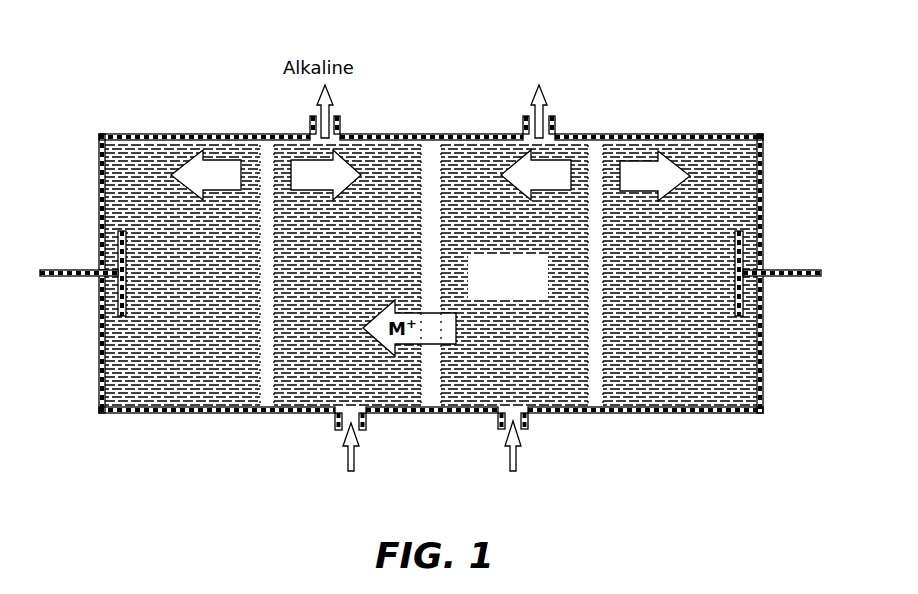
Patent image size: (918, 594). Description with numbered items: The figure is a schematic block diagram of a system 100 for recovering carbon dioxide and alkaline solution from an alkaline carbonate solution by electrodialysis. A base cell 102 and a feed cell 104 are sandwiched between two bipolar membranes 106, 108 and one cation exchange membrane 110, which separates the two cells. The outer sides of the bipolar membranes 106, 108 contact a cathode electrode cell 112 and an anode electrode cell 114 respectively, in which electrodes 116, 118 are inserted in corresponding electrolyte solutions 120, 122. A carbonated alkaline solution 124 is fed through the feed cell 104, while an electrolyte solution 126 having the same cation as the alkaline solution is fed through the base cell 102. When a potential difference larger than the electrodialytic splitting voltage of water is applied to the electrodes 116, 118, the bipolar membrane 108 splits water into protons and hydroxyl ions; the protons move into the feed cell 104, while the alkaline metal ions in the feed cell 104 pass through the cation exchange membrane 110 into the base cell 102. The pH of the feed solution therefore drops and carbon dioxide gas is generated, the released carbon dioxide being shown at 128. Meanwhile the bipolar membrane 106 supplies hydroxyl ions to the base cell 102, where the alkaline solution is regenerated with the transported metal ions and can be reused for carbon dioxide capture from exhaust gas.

The system 100 is at (155, 40).
The base cell 102 is at (359, 381).
The feed cell 104 is at (519, 381).
The bipolar membrane 106 is at (257, 392).
The bipolar membrane 108 is at (594, 405).
The cation exchange membrane 110 is at (422, 393).
The cathode electrode cell 112 is at (143, 137).
The anode electrode cell 114 is at (686, 137).
The electrode 116 is at (83, 269).
The electrode 118 is at (765, 270).
The electrolyte solution 120 is at (193, 381).
The electrolyte solution 122 is at (691, 381).
The carbonated alkaline solution 124 is at (508, 453).
The electrolyte solution 126 is at (340, 440).
The released CO2 128 is at (518, 118).